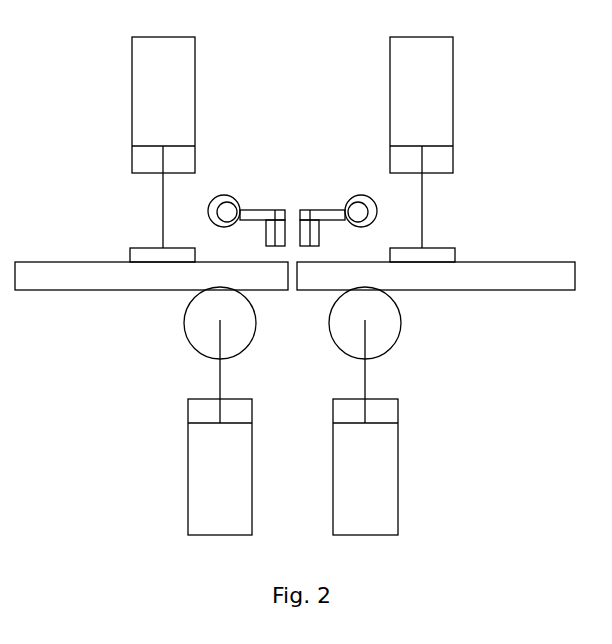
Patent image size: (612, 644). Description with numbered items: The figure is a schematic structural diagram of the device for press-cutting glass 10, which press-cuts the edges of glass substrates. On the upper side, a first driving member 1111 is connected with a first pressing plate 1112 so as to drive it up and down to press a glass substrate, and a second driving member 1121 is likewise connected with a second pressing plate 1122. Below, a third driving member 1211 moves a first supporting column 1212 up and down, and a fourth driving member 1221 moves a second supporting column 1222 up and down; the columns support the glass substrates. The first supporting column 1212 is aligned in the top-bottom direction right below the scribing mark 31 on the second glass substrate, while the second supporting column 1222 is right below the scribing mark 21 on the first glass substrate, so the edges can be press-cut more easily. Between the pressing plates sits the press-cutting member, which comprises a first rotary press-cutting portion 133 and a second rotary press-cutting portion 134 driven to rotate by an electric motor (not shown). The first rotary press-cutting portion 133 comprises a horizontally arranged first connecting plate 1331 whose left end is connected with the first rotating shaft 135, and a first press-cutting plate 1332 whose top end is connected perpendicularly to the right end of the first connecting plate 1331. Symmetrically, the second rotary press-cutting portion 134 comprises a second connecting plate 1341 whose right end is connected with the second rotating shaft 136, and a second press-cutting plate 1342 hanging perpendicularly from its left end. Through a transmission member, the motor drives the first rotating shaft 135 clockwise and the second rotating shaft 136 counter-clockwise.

The device for press-cutting glass 10 is at (471, 80).
The first driving member 1111 is at (142, 125).
The second driving member 1121 is at (445, 137).
The first pressing plate 1112 is at (138, 250).
The second pressing plate 1122 is at (437, 247).
The first rotating shaft 135 is at (207, 211).
The second rotating shaft 136 is at (378, 211).
The first press-cutting plate 1332 is at (273, 208).
The first connecting plate 1331 is at (262, 207).
The second press-cutting plate 1342 is at (312, 208).
The second connecting plate 1341 is at (323, 207).
The first rotary press-cutting portion 133 is at (255, 232).
The second rotary press-cutting portion 134 is at (330, 232).
The scribing mark 31 is at (218, 268).
The scribing mark 21 is at (367, 268).
The first supporting column 1212 is at (200, 322).
The second supporting column 1222 is at (385, 322).
The third driving member 1211 is at (206, 473).
The fourth driving member 1221 is at (372, 467).